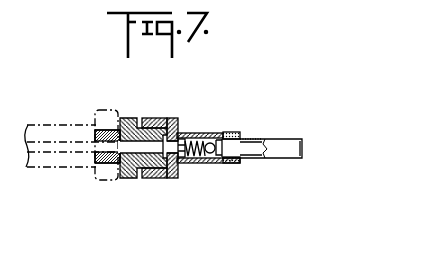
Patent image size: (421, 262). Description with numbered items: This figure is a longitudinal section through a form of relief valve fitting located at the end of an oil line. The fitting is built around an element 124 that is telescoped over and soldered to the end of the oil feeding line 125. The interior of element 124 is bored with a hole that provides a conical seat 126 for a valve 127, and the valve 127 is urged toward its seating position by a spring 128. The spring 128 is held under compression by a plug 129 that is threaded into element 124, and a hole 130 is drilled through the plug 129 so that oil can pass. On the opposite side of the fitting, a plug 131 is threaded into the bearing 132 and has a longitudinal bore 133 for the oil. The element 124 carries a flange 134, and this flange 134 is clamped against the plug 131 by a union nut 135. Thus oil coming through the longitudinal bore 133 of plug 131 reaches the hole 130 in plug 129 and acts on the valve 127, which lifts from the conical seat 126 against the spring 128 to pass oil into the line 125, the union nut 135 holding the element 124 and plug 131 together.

The element 124 is at (224, 133).
The oil feeding line 125 is at (300, 151).
The conical seat 126 is at (237, 134).
The valve 127 is at (210, 163).
The spring 128 is at (196, 132).
The plug 129 is at (195, 132).
The hole 130 is at (169, 179).
The plug 131 is at (130, 118).
The bearing 132 is at (58, 168).
The longitudinal bore 133 is at (136, 148).
The flange 134 is at (161, 118).
The union nut 135 is at (150, 179).